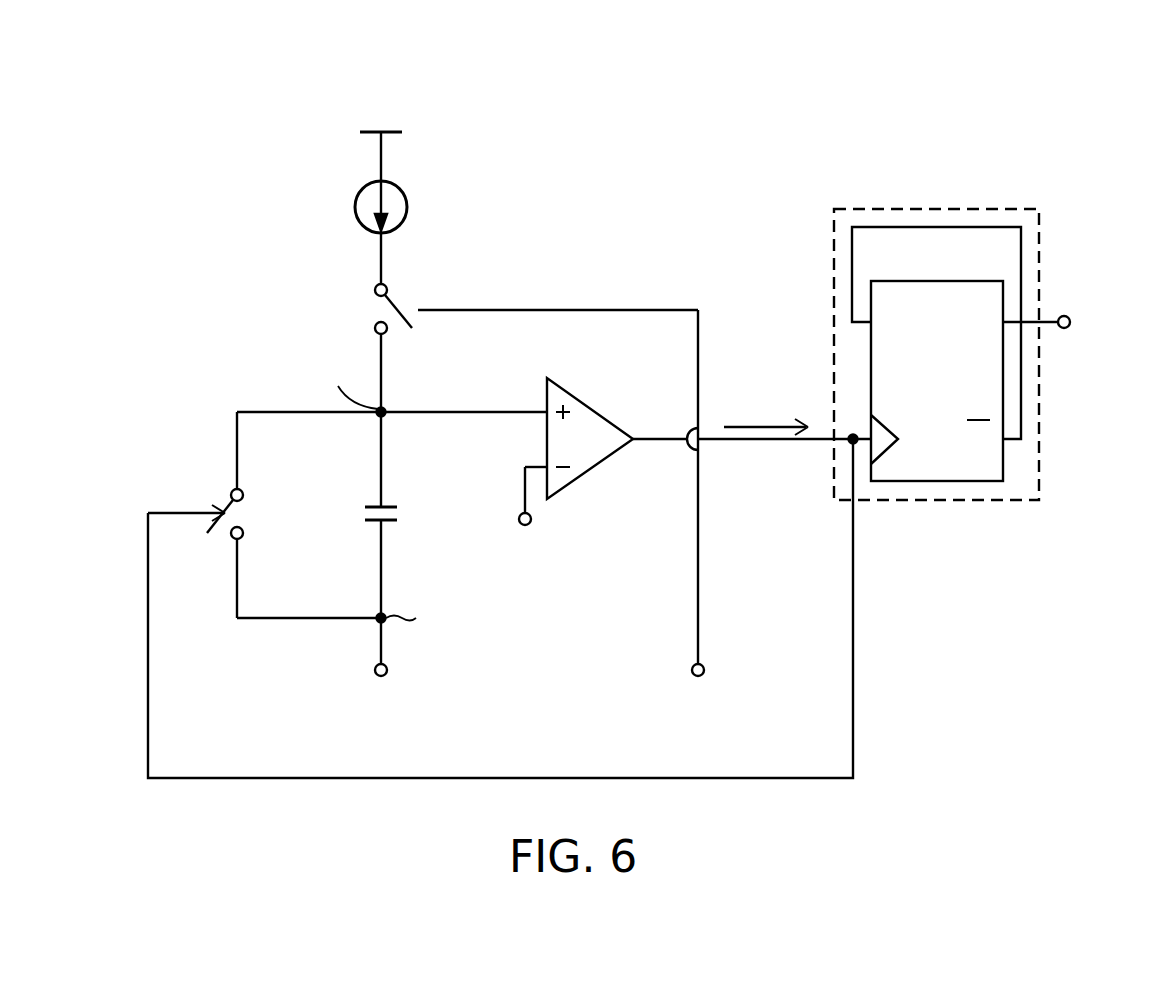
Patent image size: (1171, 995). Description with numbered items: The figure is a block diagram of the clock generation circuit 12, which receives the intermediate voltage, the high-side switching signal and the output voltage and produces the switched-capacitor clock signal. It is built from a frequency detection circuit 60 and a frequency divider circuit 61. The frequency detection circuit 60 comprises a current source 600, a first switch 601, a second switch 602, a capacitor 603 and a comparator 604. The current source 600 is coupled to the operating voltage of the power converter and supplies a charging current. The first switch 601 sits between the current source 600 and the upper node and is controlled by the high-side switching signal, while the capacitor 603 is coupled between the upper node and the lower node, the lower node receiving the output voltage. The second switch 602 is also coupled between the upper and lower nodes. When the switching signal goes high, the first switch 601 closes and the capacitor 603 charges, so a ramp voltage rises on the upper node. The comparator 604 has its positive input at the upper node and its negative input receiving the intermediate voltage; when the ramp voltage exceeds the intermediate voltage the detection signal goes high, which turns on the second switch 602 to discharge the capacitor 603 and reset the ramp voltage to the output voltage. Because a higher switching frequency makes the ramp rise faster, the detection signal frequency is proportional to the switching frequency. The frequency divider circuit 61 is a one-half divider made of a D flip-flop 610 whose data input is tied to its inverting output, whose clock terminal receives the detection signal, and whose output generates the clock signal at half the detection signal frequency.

The clock generation circuit 12 is at (158, 85).
The frequency detection circuit 60 is at (637, 137).
The frequency divider circuit 61 is at (838, 206).
The current source 600 is at (409, 207).
The switch 601 is at (375, 310).
The switch 602 is at (247, 516).
The capacitor 603 is at (391, 506).
The comparator 604 is at (590, 405).
The D flip-flop 610 is at (872, 280).